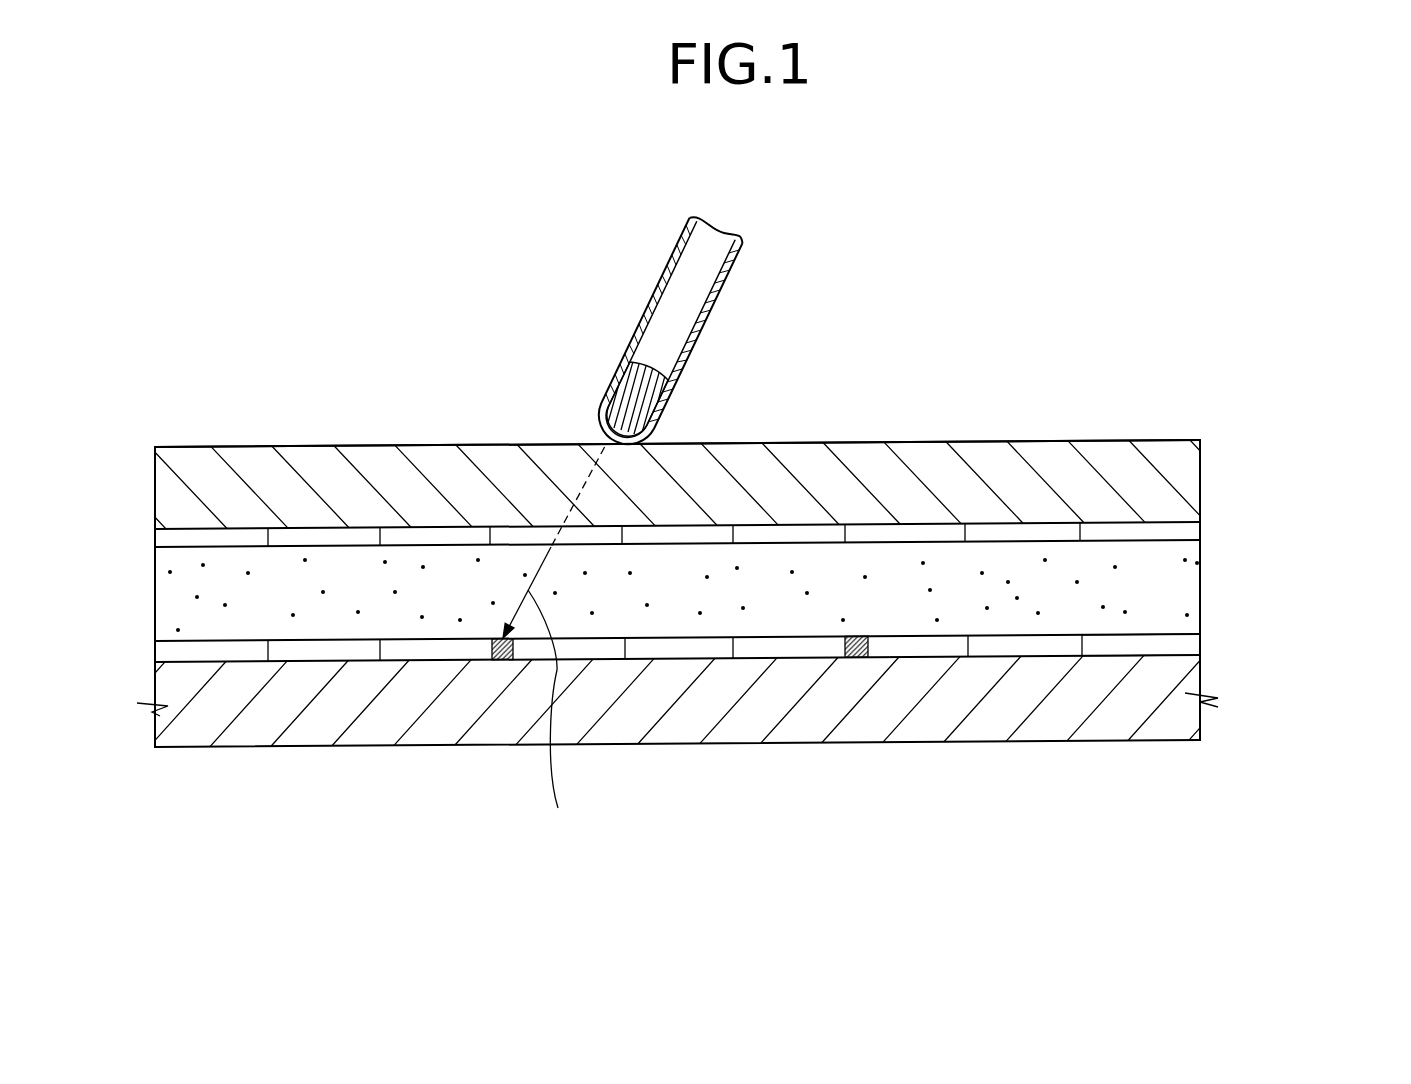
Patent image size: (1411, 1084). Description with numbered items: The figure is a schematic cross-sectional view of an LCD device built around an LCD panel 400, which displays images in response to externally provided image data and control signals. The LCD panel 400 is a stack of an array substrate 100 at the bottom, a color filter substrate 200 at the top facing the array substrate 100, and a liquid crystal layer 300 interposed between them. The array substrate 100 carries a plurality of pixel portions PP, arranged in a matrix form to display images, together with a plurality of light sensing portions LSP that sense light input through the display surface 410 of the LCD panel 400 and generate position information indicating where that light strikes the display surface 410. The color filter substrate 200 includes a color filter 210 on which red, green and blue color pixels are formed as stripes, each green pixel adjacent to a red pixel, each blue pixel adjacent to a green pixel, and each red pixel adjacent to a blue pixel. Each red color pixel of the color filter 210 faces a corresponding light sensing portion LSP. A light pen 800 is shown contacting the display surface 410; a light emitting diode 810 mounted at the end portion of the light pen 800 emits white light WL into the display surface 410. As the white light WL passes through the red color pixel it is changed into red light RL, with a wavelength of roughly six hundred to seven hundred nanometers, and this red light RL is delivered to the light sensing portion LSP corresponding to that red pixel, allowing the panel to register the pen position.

The array substrate 100 is at (1218, 637).
The color filter substrate 200 is at (1218, 440).
The color filter 210 is at (158, 538).
The liquid crystal layer 300 is at (1142, 592).
The LCD panel 400 is at (1320, 438).
The display surface 410 is at (1038, 440).
The light pen 800 is at (703, 328).
The light emitting diode 810 is at (616, 406).
The white light WL is at (581, 492).
The red light RL is at (556, 721).
The light sensing portion LSP is at (853, 660).
The pixel portion PP is at (1160, 640).